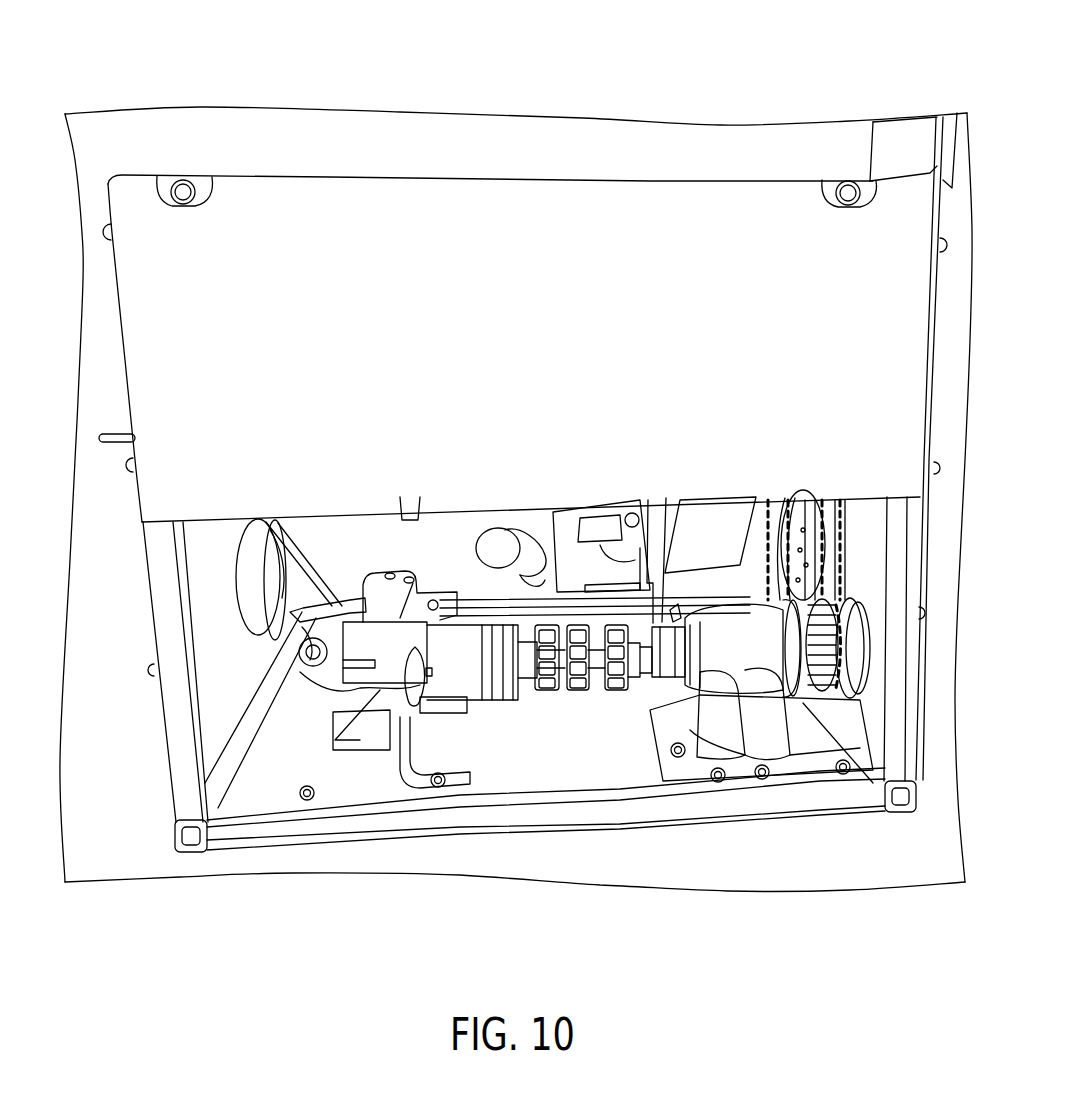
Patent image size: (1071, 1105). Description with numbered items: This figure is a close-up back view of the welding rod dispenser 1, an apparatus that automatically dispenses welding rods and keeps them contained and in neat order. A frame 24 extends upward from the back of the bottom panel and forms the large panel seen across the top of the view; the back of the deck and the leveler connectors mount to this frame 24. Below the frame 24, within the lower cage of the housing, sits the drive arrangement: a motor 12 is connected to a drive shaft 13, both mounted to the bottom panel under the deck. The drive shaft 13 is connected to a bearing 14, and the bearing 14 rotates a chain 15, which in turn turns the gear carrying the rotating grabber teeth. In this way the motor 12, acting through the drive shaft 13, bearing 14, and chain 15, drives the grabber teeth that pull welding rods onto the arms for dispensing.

The welding rod dispenser 1 is at (102, 100).
The frame 24 is at (485, 310).
The motor 12 is at (388, 662).
The drive shaft 13 is at (588, 690).
The bearing 14 is at (817, 683).
The chain 15 is at (842, 697).